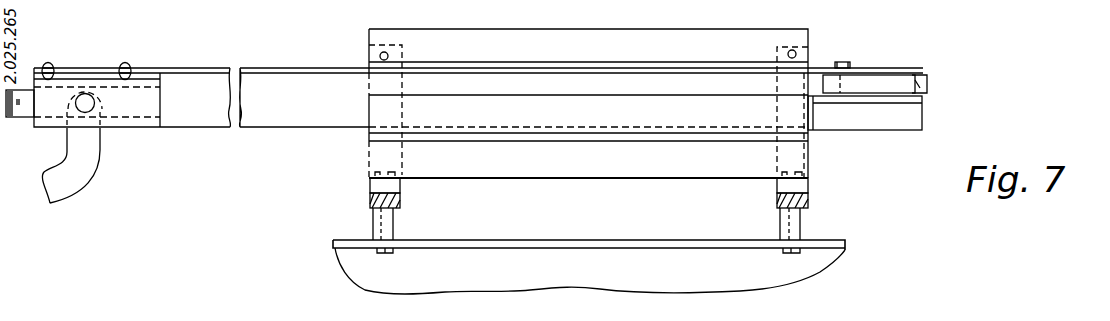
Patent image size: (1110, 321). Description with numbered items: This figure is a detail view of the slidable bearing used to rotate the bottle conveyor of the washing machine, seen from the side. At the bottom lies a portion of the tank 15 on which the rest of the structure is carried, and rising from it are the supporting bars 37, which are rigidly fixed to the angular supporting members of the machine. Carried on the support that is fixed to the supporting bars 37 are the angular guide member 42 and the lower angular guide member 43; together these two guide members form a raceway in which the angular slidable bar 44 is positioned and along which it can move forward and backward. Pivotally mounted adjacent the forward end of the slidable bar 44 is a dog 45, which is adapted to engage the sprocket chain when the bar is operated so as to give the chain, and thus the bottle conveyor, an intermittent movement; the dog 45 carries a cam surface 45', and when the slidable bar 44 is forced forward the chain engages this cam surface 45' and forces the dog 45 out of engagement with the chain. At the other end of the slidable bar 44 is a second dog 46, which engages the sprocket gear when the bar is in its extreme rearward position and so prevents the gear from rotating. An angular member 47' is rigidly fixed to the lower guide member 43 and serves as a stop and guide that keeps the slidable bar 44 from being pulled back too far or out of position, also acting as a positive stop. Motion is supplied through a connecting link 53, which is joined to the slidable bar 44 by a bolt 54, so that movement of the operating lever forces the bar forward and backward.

The tank 15 is at (597, 279).
The supporting bars 37 is at (369, 203).
The angular guide member 42 is at (530, 50).
The lower angular guide member 43 is at (712, 167).
The angular slidable bar 44 is at (292, 83).
The dog 45 is at (895, 76).
The cam surface 45' is at (942, 89).
The dog 46 is at (22, 113).
The angular member 47' is at (855, 132).
The connecting link 53 is at (82, 176).
The bolt 54 is at (88, 107).